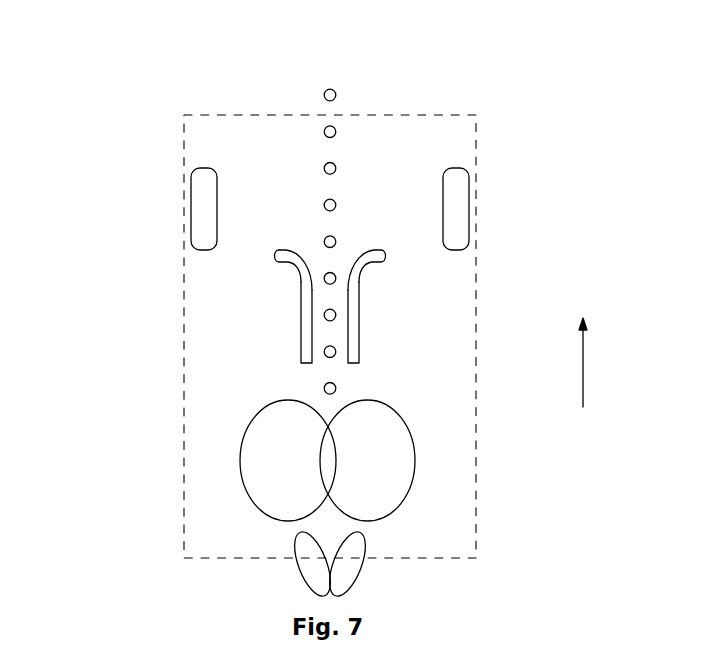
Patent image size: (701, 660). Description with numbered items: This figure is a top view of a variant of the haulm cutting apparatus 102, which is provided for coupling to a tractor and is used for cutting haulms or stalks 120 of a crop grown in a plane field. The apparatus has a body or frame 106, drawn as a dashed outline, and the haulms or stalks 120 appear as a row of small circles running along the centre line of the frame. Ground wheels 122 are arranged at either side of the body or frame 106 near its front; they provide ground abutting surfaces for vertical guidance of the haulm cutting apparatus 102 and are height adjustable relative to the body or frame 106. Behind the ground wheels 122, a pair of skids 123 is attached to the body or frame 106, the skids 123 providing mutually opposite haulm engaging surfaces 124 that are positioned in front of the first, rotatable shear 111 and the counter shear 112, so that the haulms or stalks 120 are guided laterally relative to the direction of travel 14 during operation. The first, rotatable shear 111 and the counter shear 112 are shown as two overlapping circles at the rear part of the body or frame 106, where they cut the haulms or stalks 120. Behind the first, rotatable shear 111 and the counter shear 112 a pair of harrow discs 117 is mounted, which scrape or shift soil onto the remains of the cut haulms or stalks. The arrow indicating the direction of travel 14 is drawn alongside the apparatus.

The haulm cutting apparatus 102 is at (117, 505).
The body or frame 106 is at (476, 275).
The haulms or stalks 120 is at (330, 132).
The ground wheels 122 is at (203, 188).
The skids 123 is at (306, 316).
The haulm engaging surfaces 124 is at (310, 264).
The counter shear 112 is at (278, 401).
The first, rotatable shear 111 is at (382, 402).
The harrow discs 117 is at (306, 575).
The direction of travel 14 is at (583, 370).